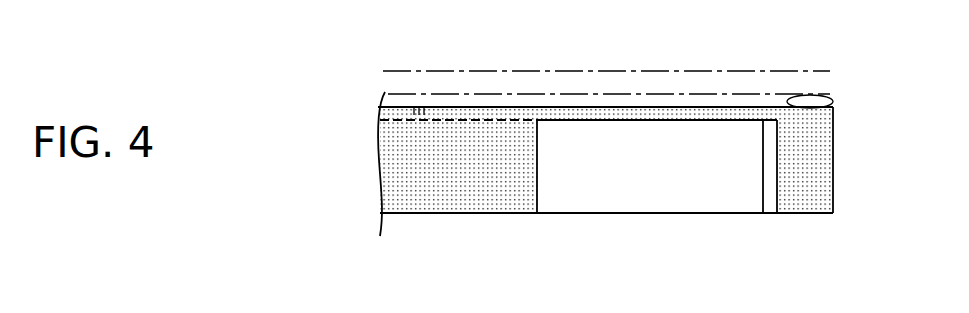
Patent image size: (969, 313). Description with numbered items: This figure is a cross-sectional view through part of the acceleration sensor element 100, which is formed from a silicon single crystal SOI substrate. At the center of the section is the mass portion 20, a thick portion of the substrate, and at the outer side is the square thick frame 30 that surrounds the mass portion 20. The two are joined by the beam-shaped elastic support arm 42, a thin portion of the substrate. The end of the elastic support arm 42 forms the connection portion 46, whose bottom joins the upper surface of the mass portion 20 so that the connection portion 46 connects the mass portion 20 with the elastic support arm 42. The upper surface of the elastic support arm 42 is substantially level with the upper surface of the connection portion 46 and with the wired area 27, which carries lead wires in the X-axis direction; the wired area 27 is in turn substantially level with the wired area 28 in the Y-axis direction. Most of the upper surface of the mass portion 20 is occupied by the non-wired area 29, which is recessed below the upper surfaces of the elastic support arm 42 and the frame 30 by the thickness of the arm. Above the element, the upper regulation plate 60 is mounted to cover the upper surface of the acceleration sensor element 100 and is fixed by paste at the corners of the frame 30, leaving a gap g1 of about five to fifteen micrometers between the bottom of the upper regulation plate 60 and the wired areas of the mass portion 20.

The acceleration sensor element 100 is at (350, 120).
The mass portion 20 is at (477, 170).
The wired area 27 is at (462, 120).
The wired area 28 is at (423, 117).
The non-wired area 29 is at (650, 182).
The frame 30 is at (810, 183).
The elastic support arm 42 is at (673, 117).
The connection portion 46 is at (508, 118).
The upper regulation plate 60 is at (787, 82).
The gap g1 is at (550, 127).